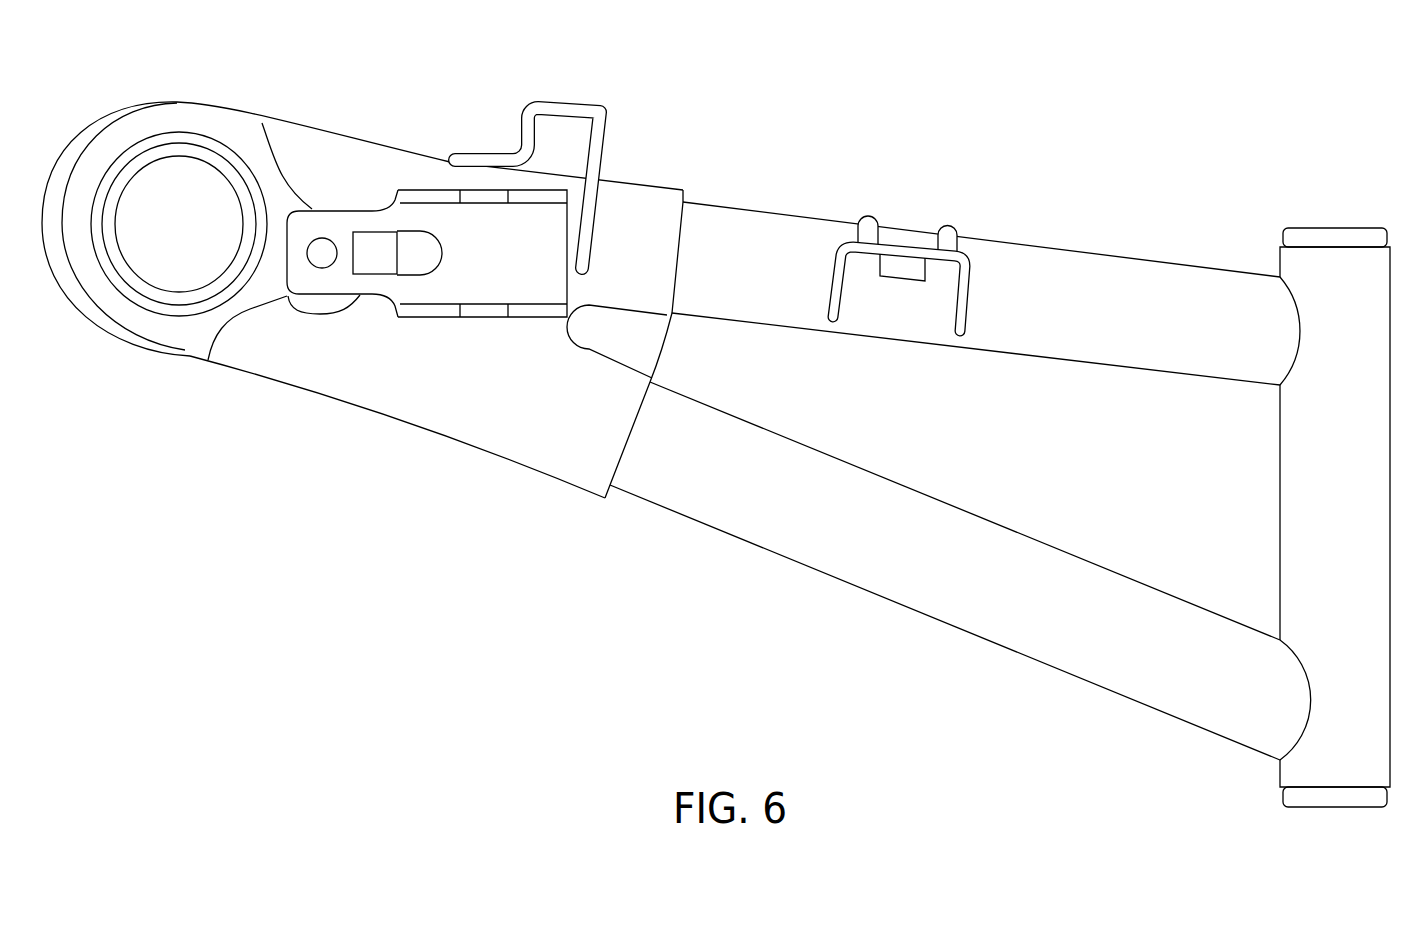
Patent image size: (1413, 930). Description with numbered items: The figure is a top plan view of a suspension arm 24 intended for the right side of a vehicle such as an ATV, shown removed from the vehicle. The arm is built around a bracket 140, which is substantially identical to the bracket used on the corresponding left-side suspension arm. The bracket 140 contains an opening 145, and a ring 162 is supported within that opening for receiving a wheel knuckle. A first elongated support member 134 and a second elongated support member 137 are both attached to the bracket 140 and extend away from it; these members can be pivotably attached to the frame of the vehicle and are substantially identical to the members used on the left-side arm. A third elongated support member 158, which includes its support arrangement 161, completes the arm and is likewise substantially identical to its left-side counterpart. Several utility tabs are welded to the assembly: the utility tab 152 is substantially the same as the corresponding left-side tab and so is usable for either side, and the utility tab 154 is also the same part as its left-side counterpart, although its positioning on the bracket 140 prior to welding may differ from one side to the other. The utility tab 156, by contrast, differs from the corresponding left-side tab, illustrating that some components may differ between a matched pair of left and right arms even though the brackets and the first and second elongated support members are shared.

The suspension arm 24 is at (1196, 108).
The first elongated support member 134 is at (893, 196).
The second elongated support member 137 is at (841, 609).
The bracket 140 is at (437, 466).
The opening 145 is at (153, 136).
The utility tab 152 is at (905, 270).
The utility tab 154 is at (427, 214).
The utility tab 156 is at (565, 112).
The third elongated support member 158 is at (1248, 512).
The support arrangement 161 is at (1318, 800).
The ring 162 is at (222, 150).